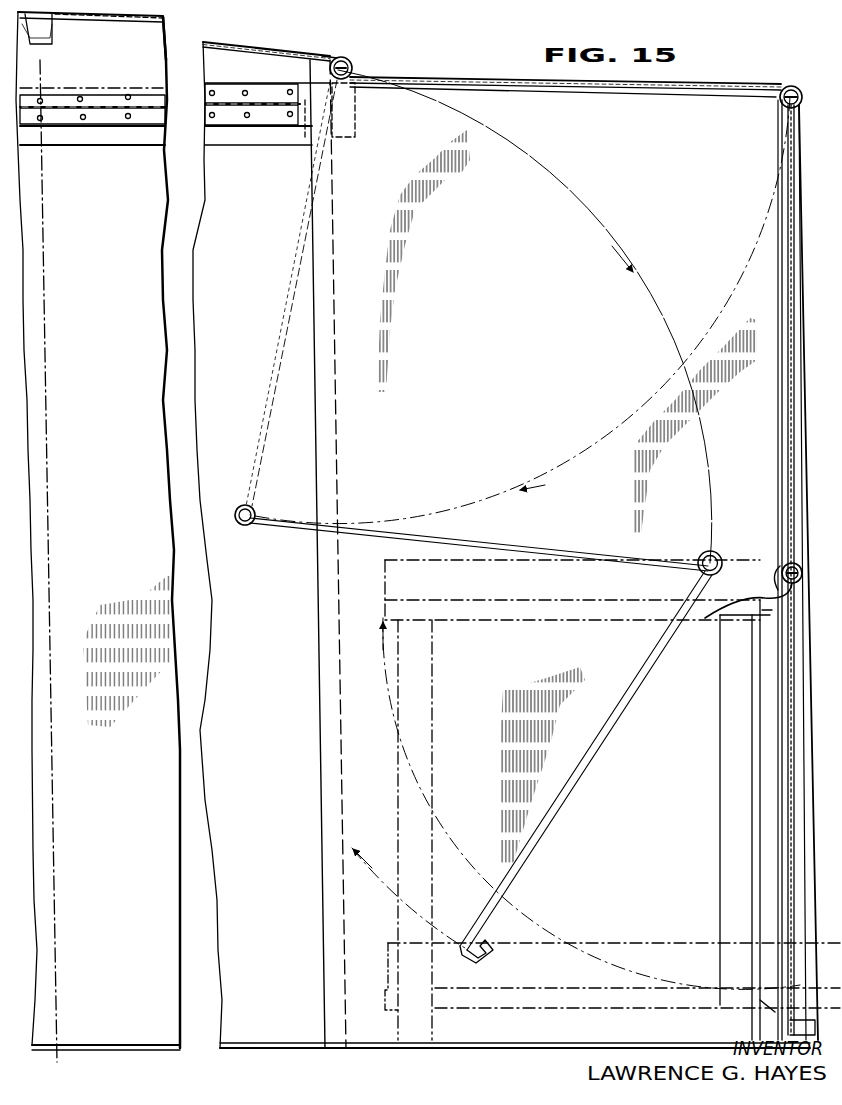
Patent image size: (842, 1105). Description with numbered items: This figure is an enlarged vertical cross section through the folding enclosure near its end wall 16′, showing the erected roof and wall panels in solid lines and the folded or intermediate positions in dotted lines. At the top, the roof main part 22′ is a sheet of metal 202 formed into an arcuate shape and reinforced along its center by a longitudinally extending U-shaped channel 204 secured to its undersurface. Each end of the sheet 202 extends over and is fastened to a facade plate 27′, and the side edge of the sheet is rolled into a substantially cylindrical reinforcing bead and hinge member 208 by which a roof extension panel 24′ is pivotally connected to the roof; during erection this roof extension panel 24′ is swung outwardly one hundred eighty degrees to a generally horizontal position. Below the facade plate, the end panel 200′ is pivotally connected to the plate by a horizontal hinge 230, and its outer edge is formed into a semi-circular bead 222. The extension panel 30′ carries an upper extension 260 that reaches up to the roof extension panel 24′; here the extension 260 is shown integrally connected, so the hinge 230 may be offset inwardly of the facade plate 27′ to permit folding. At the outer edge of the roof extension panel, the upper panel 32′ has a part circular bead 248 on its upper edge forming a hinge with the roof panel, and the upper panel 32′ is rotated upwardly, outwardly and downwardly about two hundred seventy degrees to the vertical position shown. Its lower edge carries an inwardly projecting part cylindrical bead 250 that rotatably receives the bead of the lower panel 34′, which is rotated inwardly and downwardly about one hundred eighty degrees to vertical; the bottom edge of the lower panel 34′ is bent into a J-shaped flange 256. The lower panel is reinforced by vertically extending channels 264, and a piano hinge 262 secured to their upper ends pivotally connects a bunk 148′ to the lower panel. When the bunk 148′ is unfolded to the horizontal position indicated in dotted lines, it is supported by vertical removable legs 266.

The end wall 16′ is at (143, 1052).
The end panel 200′ is at (160, 1022).
The U-shaped channel 204 is at (50, 30).
The horizontal hinge 230 is at (68, 90).
The facade plate 27′ is at (228, 58).
The roof main part 22′ is at (266, 42).
The sheet of metal 202 is at (328, 52).
The upper extension 260 is at (330, 102).
The reinforcing bead and hinge member 208 is at (353, 60).
The semi-circular bead 222 is at (318, 736).
The roof extension panel 24′ is at (447, 77).
The part circular bead 248 is at (798, 88).
The upper panel 32′ is at (796, 474).
The extension panel 30′ is at (574, 346).
The bunk 148′ is at (515, 630).
The lower panel 34′ is at (530, 846).
The removable leg 266 is at (438, 752).
The piano hinge 262 is at (770, 570).
The part cylindrical bead 250 is at (737, 616).
The vertically extending channel 264 is at (775, 1005).
The J-shaped flange 256 is at (812, 1025).